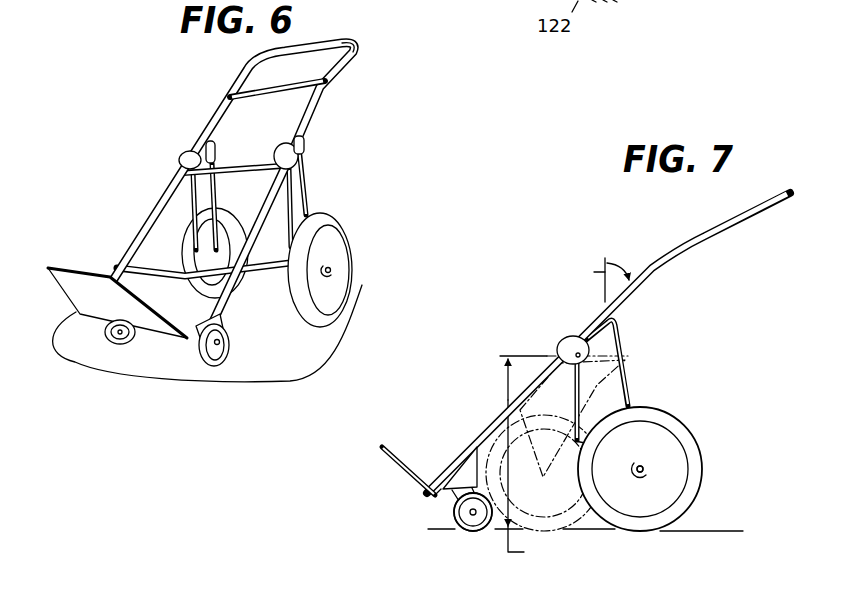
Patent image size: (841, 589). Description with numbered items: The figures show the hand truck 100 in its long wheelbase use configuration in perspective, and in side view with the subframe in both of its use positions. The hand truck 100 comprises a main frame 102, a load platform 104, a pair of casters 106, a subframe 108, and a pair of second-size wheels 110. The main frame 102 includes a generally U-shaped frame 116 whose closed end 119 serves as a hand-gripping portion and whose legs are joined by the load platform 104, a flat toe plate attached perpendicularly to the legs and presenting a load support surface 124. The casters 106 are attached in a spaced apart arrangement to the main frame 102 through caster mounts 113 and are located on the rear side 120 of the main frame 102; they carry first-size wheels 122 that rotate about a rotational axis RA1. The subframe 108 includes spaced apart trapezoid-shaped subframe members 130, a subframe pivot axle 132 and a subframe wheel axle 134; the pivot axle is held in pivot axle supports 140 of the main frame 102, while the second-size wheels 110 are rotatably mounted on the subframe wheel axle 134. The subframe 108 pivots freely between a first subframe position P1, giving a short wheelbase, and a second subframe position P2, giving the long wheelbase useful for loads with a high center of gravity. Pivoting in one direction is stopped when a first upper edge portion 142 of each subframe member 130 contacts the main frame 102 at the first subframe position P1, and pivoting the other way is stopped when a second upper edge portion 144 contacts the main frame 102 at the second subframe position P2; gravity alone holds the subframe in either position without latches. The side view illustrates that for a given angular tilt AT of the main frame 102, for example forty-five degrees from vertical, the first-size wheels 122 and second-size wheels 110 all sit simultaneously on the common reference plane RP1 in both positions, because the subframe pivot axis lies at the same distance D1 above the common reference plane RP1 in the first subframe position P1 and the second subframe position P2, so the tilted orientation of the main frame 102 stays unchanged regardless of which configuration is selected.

In FIG. 6, the hand truck 100 is at (203, 104).
In FIG. 7, the hand truck 100 is at (667, 292).
In FIG. 6, the main frame 102 is at (321, 88).
In FIG. 7, the main frame 102 is at (736, 214).
In FIG. 6, the load platform 104 is at (86, 290).
In FIG. 7, the load platform 104 is at (388, 446).
In FIG. 6, the casters 106 is at (196, 355).
In FIG. 7, the casters 106 is at (455, 512).
In FIG. 6, the subframe 108 is at (305, 185).
In FIG. 7, the subframe 108 is at (628, 383).
In FIG. 6, the second-size wheels 110 is at (357, 283).
In FIG. 7, the second-size wheels 110 is at (687, 513).
In FIG. 6, the caster mounts 113 is at (212, 303).
In FIG. 7, the caster mounts 113 is at (460, 471).
In FIG. 6, the U-shaped frame 116 is at (248, 72).
In FIG. 7, the U-shaped frame 116 is at (661, 254).
In FIG. 6, the closed end 119 is at (360, 46).
In FIG. 7, the closed end 119 is at (790, 190).
In FIG. 7, the rear side 120 is at (673, 260).
In FIG. 6, the first-size wheels 122 is at (207, 368).
In FIG. 7, the first-size wheels 122 is at (460, 526).
In FIG. 7, the load support surface 124 is at (396, 452).
In FIG. 6, the subframe members 130 is at (298, 158).
In FIG. 6, the subframe pivot axle 132 is at (245, 165).
In FIG. 7, the subframe pivot axle 132 is at (558, 354).
In FIG. 7, the subframe wheel axle 134 is at (643, 468).
In FIG. 6, the pivot axle supports 140 is at (184, 162).
In FIG. 7, the pivot axle supports 140 is at (576, 340).
In FIG. 6, the first upper edge portion 142 is at (192, 206).
In FIG. 6, the second upper edge portion 144 is at (205, 152).
In FIG. 7, the first subframe position P1 is at (630, 346).
In FIG. 6, the second subframe position P2 is at (362, 195).
In FIG. 7, the second subframe position P2 is at (690, 398).
In FIG. 6, the common reference plane RP1 is at (340, 327).
In FIG. 7, the common reference plane RP1 is at (733, 530).
In FIG. 7, the rotational axis RA1 is at (640, 469).
In FIG. 7, the angular tilt AT is at (598, 280).
In FIG. 7, the distance D1 is at (526, 460).